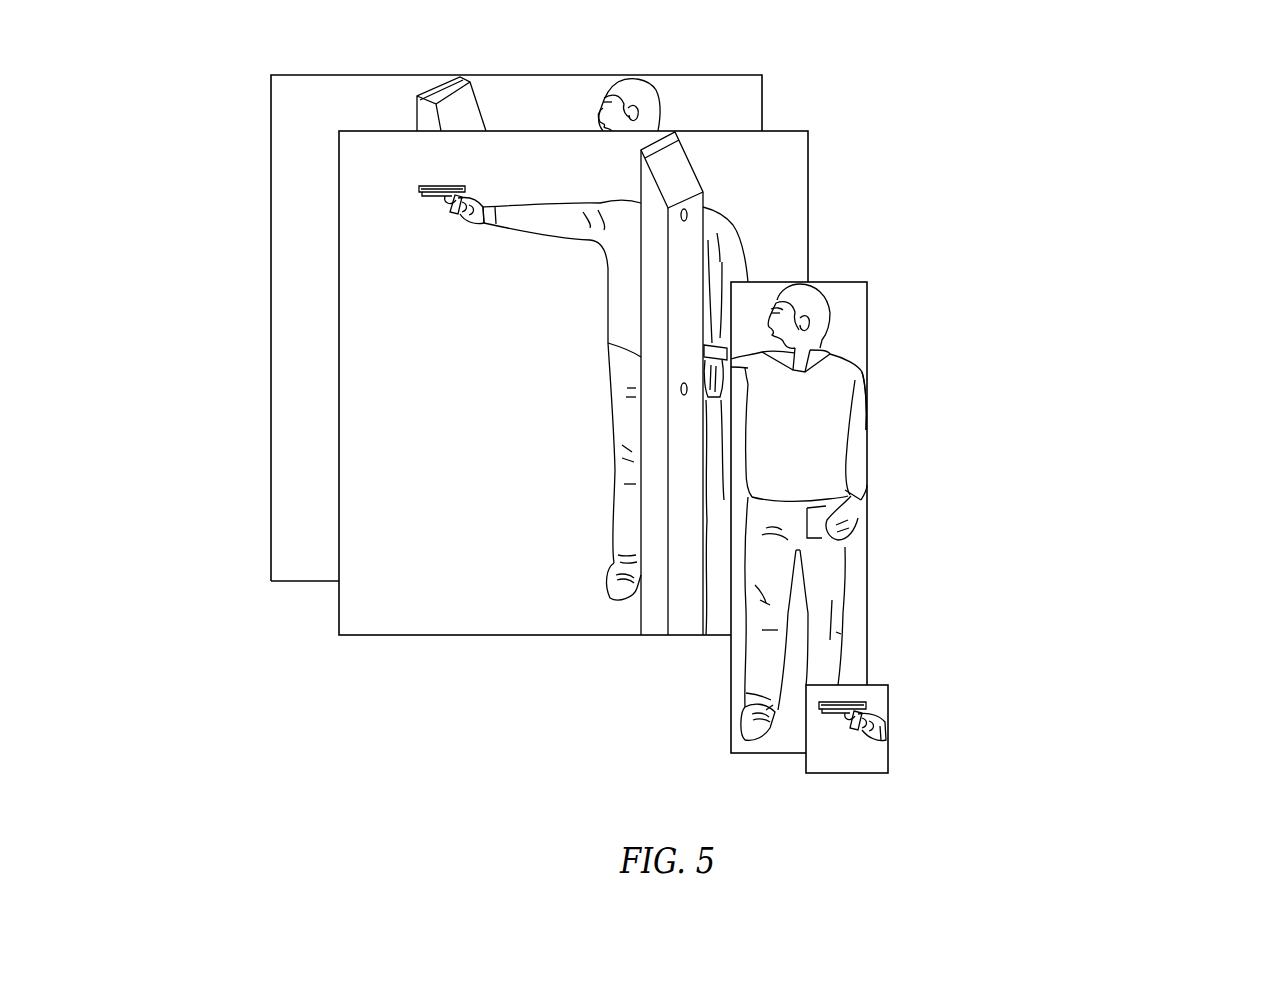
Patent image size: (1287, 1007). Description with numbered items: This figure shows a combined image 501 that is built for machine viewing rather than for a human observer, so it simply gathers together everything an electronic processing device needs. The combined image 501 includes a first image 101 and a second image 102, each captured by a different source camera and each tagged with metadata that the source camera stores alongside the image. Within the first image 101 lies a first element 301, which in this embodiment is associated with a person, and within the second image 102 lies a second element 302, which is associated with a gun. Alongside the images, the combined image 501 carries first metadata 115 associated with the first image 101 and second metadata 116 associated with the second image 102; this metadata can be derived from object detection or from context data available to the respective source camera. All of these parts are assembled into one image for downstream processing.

The combined image 501 is at (178, 59).
The first image 101 is at (305, 582).
The second image 102 is at (537, 637).
The first element 301 is at (730, 668).
The second element 302 is at (888, 755).
The first metadata 115 is at (1166, 286).
The second metadata 116 is at (1167, 494).